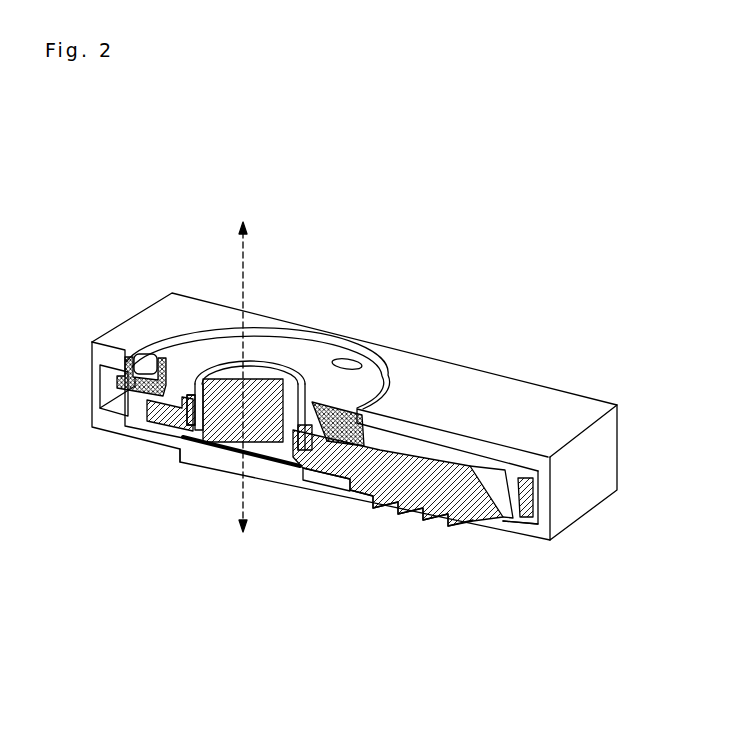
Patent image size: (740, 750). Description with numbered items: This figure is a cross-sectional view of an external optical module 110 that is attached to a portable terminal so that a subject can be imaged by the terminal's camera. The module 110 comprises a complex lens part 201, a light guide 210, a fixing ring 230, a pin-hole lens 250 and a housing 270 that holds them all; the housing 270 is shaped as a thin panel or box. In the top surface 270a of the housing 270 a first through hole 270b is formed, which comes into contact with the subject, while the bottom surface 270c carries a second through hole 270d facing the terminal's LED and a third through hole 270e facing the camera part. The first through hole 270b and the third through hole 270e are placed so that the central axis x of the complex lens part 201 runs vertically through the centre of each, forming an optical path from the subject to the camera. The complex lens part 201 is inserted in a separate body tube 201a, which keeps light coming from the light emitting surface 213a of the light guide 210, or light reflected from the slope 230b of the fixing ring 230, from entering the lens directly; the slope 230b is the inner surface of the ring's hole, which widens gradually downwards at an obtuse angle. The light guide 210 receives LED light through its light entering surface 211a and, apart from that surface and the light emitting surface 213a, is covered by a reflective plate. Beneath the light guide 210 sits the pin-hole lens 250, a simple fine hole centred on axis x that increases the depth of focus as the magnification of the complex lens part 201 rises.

The external optical module 110 is at (513, 702).
The complex lens part 201 is at (256, 384).
The body tube 201a is at (278, 357).
The light guide 210 is at (470, 530).
The light entering surface 211a is at (407, 503).
The light emitting surface 213a is at (160, 392).
The fixing ring 230 is at (362, 343).
The slope 230b is at (217, 335).
The pin-hole lens 250 is at (250, 453).
The housing 270 is at (558, 386).
The top surface 270a is at (488, 392).
The first through hole 270b is at (158, 340).
The bottom surface 270c is at (545, 543).
The second through hole 270d is at (515, 540).
The third through hole 270e is at (187, 448).